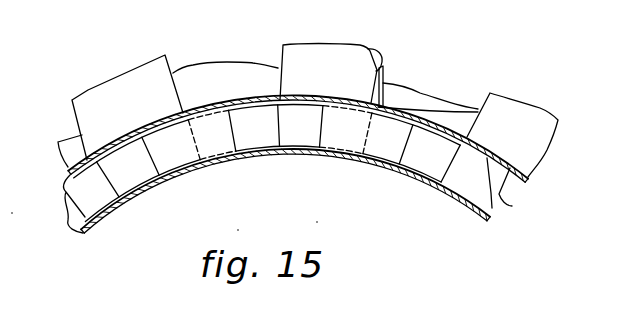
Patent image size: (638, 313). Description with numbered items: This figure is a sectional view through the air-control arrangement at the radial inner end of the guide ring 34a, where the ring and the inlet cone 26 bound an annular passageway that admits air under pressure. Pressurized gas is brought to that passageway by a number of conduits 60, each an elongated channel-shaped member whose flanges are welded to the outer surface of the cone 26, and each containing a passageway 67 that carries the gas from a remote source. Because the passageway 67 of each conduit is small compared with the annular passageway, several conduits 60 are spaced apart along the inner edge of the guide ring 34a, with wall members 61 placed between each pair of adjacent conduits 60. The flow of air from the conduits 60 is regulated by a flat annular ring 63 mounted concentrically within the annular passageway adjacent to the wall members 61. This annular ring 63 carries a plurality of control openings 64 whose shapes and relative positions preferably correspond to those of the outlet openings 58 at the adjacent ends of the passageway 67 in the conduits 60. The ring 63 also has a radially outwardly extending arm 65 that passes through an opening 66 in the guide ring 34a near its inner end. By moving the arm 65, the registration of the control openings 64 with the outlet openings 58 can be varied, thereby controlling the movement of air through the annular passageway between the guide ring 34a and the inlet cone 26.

The inlet cone 26 is at (370, 164).
The guide ring 34a is at (158, 120).
The outlet openings 58 is at (307, 143).
The conduits 60 is at (279, 55).
The wall members 61 is at (253, 140).
The annular ring 63 is at (417, 96).
The control openings 64 is at (259, 109).
The arm 65 is at (368, 51).
The opening 66 is at (353, 63).
The passageway 67 is at (448, 176).